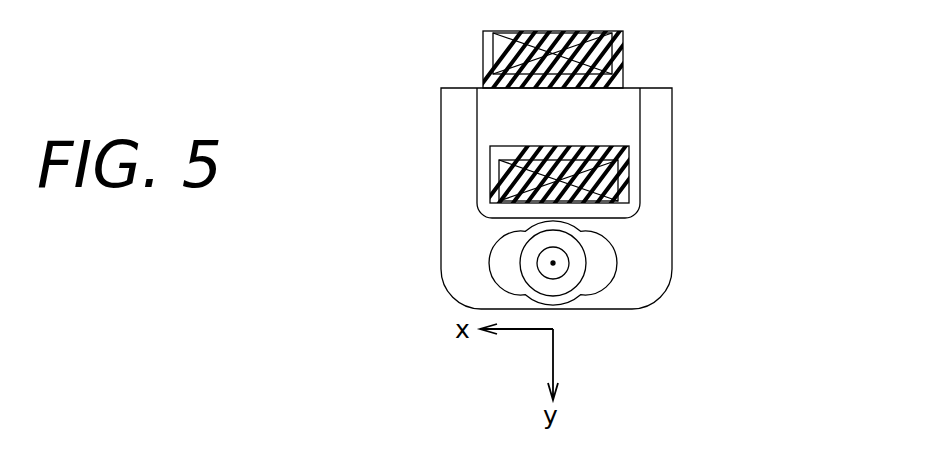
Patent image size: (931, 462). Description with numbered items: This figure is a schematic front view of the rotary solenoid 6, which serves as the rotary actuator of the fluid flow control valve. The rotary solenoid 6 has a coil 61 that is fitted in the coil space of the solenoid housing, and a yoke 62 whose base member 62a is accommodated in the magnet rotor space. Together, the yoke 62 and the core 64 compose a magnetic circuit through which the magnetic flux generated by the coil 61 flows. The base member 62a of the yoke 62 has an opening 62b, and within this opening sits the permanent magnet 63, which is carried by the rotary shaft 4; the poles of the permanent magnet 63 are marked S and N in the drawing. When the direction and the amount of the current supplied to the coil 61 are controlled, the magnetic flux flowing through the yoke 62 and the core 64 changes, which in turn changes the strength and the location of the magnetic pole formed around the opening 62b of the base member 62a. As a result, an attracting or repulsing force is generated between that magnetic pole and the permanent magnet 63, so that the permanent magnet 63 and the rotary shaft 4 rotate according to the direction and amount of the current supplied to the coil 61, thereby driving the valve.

The rotary solenoid 6 is at (428, 166).
The coil 61 is at (598, 56).
The yoke 62 is at (455, 233).
The base member 62a is at (652, 278).
The opening 62b is at (605, 253).
The permanent magnet 63 is at (575, 270).
The core 64 is at (495, 119).
The rotary shaft 4 is at (537, 260).
The south pole S is at (552, 242).
The north pole N is at (552, 287).